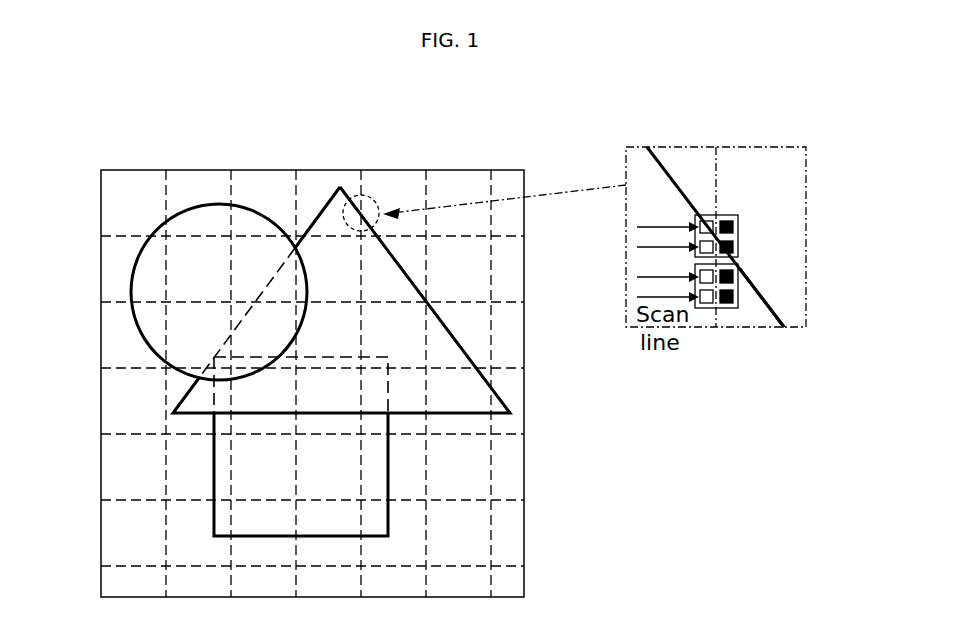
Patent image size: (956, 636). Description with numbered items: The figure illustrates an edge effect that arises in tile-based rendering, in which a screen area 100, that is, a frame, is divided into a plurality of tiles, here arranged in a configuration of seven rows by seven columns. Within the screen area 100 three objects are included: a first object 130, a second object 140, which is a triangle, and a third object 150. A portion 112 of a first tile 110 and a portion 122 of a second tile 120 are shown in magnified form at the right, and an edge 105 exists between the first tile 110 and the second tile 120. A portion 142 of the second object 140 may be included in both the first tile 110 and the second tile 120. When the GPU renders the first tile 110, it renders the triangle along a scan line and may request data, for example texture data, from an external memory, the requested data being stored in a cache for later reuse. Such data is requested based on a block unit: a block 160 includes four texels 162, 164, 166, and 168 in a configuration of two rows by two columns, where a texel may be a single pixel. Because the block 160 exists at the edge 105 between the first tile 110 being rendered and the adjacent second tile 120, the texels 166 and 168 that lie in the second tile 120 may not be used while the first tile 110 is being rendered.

The screen area 100 is at (101, 170).
The edge 105 is at (718, 148).
The first tile 110 is at (327, 184).
The portion of first tile 112 is at (638, 156).
The second tile 120 is at (395, 184).
The portion of second tile 122 is at (786, 155).
The first object 130 is at (131, 266).
The second object 140 is at (465, 352).
The portion of second object 142 is at (770, 303).
The third object 150 is at (213, 474).
The block 160 is at (740, 212).
The texel 162 is at (713, 215).
The texel 164 is at (698, 243).
The texel 166 is at (736, 225).
The texel 168 is at (736, 246).